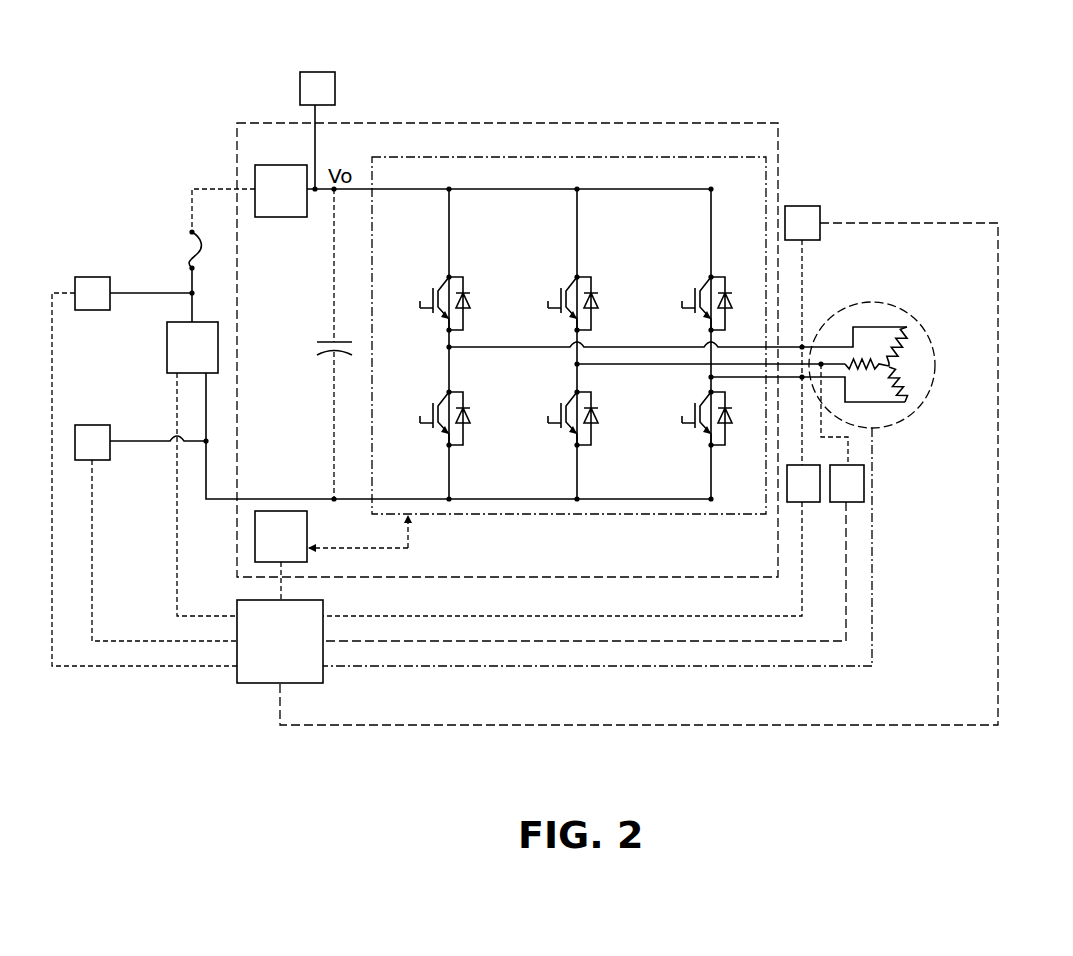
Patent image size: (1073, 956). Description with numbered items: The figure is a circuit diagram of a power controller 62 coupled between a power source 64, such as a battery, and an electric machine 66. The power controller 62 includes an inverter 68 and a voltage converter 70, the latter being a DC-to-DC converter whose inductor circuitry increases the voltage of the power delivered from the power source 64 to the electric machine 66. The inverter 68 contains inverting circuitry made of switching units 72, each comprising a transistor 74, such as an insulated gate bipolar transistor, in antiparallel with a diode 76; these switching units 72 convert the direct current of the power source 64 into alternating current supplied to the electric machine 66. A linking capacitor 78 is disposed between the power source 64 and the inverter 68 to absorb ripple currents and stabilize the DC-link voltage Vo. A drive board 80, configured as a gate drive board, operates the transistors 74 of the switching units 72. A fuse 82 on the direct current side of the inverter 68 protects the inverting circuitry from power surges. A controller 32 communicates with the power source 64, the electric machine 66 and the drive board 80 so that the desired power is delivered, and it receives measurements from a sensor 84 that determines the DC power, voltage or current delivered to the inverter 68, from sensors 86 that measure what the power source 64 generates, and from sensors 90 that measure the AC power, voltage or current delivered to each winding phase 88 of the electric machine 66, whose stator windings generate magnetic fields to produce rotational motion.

The controller 32 is at (237, 608).
The power controller 62 is at (667, 121).
The power source 64 is at (192, 347).
The electric machine 66 is at (892, 351).
The inverter 68 is at (592, 156).
The voltage converter 70 is at (281, 191).
The switching unit 72 is at (575, 344).
The transistor 74 is at (419, 303).
The diode 76 is at (466, 300).
The linking capacitor 78 is at (330, 340).
The drive board 80 is at (331, 555).
The fuse 82 is at (186, 258).
The sensor 84 is at (335, 90).
The sensor 86 is at (75, 283).
The winding phase 88 is at (849, 323).
The sensor 90 is at (820, 214).